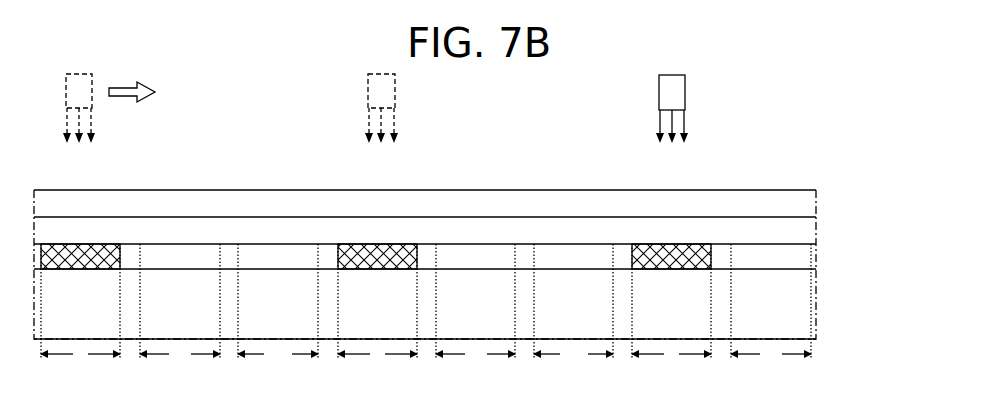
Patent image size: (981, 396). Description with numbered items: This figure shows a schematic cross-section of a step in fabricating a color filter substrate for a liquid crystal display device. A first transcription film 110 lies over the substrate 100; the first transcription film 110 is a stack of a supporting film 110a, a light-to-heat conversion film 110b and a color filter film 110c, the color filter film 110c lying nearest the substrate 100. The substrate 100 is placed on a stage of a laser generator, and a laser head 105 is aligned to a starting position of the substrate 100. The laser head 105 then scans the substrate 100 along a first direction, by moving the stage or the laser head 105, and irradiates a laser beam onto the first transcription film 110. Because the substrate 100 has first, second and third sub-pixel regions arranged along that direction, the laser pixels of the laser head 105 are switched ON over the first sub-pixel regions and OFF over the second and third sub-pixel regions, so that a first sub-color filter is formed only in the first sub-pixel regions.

The laser head 105 is at (677, 90).
The substrate 100 is at (395, 316).
The first transcription film 110 is at (477, 229).
The supporting film 110a is at (790, 203).
The light-to-heat conversion film 110b is at (790, 232).
The color filter film 110c is at (790, 258).